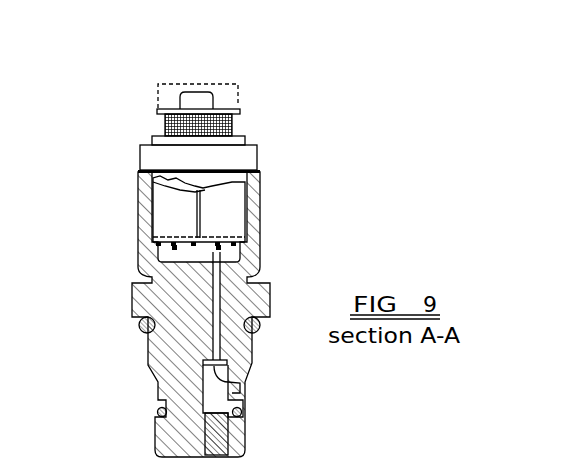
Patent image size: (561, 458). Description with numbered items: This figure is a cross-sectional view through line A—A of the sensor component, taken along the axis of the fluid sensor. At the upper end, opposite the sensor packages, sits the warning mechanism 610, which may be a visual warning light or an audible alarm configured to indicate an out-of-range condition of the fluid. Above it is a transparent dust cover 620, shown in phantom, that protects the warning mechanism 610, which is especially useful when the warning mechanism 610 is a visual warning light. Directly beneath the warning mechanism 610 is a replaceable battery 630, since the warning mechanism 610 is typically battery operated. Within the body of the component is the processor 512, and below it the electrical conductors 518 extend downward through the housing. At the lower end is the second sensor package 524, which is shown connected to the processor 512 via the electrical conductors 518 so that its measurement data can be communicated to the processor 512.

The transparent dust cover 620 is at (158, 84).
The warning mechanism 610 is at (212, 92).
The replaceable battery 630 is at (233, 127).
The processor 512 is at (232, 235).
The electrical conductors 518 is at (216, 306).
The second sensor package 524 is at (240, 385).